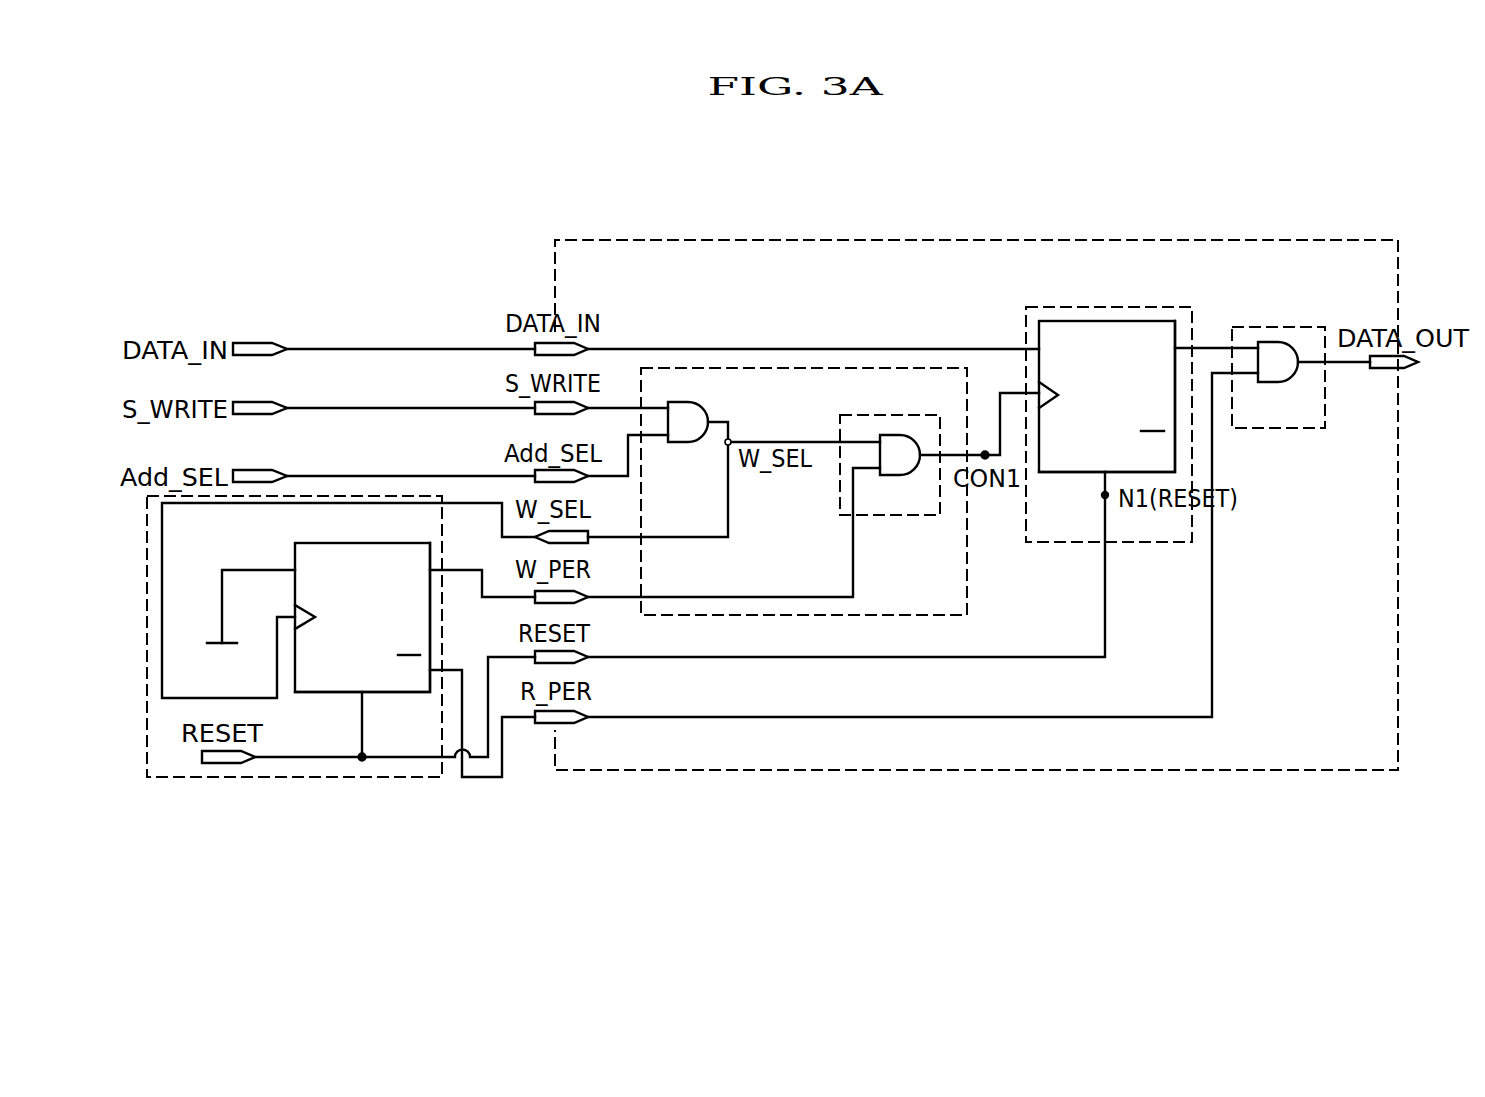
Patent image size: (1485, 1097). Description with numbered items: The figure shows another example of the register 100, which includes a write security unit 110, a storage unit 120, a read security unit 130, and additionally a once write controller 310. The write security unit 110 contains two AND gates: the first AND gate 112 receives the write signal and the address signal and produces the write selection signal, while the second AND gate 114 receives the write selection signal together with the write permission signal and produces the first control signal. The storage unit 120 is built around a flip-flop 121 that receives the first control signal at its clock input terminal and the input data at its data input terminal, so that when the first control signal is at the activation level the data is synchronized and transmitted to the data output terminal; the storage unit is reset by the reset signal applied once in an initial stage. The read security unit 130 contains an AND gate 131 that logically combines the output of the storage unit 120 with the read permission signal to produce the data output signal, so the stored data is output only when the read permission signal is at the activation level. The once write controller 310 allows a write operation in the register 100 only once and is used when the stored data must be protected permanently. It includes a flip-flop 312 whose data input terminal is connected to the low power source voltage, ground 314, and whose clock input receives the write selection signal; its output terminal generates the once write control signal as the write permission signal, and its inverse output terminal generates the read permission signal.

The register 100 is at (947, 240).
The write security unit 110 is at (795, 368).
The first AND gate 112 is at (683, 401).
The second AND gate 114 is at (893, 435).
The storage unit 120 is at (1053, 307).
The flip-flop 121 is at (1133, 321).
The read security unit 130 is at (1273, 327).
The AND gate 131 is at (1291, 346).
The once write controller 310 is at (288, 777).
The flip-flop 312 is at (393, 692).
The power source voltage GND 314 is at (212, 642).